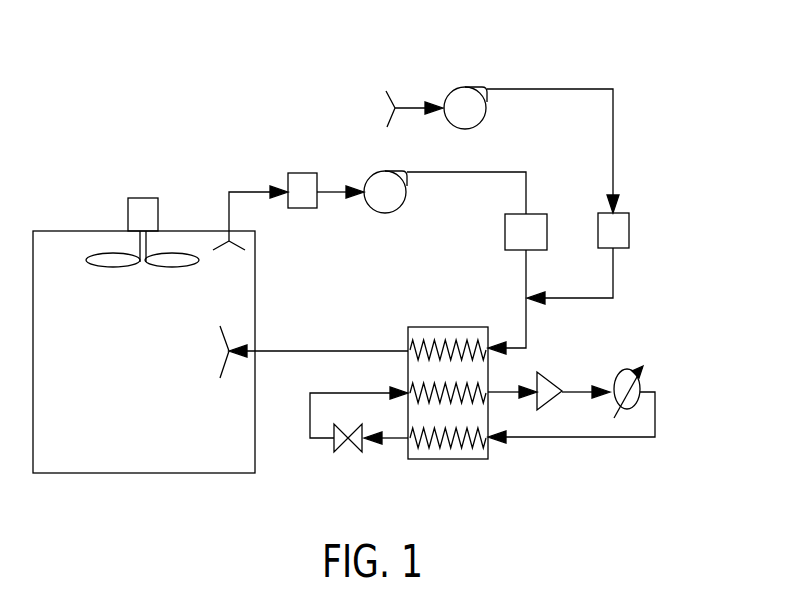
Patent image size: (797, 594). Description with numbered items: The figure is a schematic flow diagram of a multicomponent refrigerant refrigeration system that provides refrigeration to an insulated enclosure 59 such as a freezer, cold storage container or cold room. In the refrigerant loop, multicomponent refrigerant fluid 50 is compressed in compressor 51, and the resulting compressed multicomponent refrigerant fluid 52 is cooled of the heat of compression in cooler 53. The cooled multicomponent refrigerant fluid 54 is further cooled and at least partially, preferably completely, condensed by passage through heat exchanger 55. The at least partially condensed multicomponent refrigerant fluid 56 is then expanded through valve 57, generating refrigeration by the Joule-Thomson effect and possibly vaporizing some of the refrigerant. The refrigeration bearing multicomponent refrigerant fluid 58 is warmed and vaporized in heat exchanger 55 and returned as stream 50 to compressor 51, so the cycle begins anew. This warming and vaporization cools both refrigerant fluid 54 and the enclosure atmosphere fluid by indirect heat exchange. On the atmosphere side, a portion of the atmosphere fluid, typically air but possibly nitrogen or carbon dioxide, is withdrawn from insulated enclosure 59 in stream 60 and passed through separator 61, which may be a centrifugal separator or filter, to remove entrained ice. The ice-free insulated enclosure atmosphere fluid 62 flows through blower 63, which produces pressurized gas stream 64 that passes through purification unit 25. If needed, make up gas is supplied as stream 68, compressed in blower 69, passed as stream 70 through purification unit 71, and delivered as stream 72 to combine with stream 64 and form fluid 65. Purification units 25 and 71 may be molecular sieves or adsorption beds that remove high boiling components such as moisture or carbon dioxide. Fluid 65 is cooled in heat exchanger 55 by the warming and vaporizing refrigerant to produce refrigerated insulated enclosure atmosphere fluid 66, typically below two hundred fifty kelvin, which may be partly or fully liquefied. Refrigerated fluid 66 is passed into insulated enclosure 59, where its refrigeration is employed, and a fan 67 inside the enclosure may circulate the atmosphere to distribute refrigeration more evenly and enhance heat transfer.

The purification unit 25 is at (478, 242).
The multicomponent refrigerant fluid 50 is at (500, 392).
The compressor 51 is at (557, 378).
The compressed multicomponent refrigerant fluid 52 is at (580, 392).
The cooler 53 is at (628, 364).
The cooled multicomponent refrigerant fluid 54 is at (600, 437).
The heat exchanger 55 is at (440, 327).
The at least partially condensed multicomponent refrigerant fluid 56 is at (395, 440).
The valve 57 is at (350, 452).
The refrigeration bearing multicomponent refrigerant fluid 58 is at (318, 440).
The insulated enclosure 59 is at (68, 452).
The stream 60 is at (229, 212).
The separator 61 is at (292, 173).
The ice-free insulated enclosure atmosphere fluid 62 is at (333, 195).
The blower 63 is at (385, 170).
The pressurized gas stream 64 is at (463, 163).
The fluid 65 is at (530, 325).
The refrigerated insulated enclosure atmosphere fluid 66 is at (298, 350).
The fan 67 is at (117, 268).
The stream 68 is at (383, 105).
The blower 69 is at (462, 88).
The stream 70 is at (565, 90).
The purification unit 71 is at (630, 228).
The stream 72 is at (613, 280).